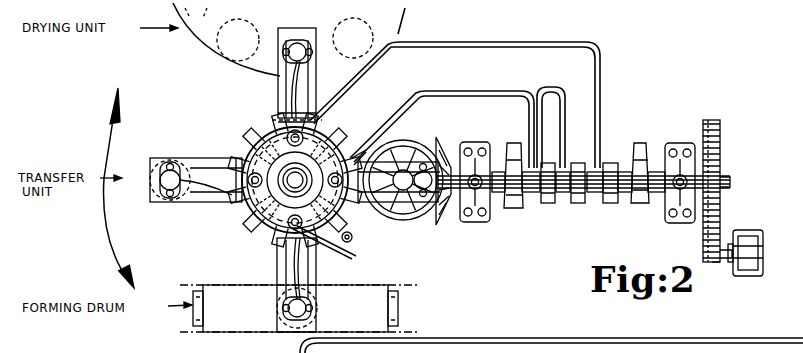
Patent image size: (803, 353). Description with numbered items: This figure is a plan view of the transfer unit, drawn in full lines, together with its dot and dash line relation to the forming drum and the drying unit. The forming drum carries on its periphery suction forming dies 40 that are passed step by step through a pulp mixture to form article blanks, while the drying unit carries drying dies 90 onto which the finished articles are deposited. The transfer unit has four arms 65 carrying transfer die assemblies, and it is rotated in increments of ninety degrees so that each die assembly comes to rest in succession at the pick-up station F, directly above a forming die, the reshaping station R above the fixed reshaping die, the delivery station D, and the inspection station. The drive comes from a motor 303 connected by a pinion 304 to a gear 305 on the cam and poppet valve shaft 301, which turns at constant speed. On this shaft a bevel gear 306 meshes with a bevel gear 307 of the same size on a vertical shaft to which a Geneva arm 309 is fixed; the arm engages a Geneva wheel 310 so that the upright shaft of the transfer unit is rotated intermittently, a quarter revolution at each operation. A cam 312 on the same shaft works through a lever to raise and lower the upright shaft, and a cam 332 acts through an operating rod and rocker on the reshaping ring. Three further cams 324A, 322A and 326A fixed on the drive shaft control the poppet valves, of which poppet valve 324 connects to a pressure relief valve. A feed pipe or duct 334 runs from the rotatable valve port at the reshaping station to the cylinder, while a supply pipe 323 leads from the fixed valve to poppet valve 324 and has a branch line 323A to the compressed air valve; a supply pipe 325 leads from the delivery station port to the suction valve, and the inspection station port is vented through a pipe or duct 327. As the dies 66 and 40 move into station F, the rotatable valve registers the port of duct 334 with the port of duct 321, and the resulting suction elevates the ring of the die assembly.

The drying dies 90 is at (208, 40).
The die 66 is at (266, 37).
The suction forming dies 40 is at (193, 318).
The arms 65 is at (398, 220).
The Geneva wheel 310 is at (240, 212).
The pipe or duct 327 is at (258, 197).
The duct 321 is at (266, 236).
The Geneva arm 309 is at (372, 242).
The poppet valve 324 is at (285, 72).
The supply pipe 325 is at (288, 121).
The supply pipe or duct 323 is at (344, 134).
The branch line 323A is at (568, 74).
The feed pipe or duct 334 is at (190, 160).
The bevel gear 307 is at (441, 226).
The cam and poppet valve shaft 301 is at (733, 183).
The bevel gear 306 is at (462, 222).
The cam 312 is at (513, 209).
The cam 324A is at (545, 204).
The cam 322A is at (578, 205).
The cam 326A is at (609, 204).
The cam 332 is at (641, 144).
The gear 305 is at (714, 121).
The pinion 304 is at (712, 263).
The motor 303 is at (752, 277).
The delivery station D is at (297, 66).
The reshaping station R is at (416, 160).
The pick-up station F is at (273, 306).